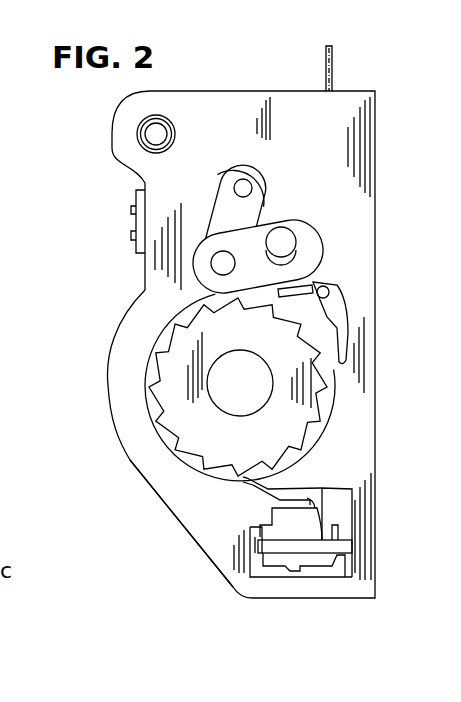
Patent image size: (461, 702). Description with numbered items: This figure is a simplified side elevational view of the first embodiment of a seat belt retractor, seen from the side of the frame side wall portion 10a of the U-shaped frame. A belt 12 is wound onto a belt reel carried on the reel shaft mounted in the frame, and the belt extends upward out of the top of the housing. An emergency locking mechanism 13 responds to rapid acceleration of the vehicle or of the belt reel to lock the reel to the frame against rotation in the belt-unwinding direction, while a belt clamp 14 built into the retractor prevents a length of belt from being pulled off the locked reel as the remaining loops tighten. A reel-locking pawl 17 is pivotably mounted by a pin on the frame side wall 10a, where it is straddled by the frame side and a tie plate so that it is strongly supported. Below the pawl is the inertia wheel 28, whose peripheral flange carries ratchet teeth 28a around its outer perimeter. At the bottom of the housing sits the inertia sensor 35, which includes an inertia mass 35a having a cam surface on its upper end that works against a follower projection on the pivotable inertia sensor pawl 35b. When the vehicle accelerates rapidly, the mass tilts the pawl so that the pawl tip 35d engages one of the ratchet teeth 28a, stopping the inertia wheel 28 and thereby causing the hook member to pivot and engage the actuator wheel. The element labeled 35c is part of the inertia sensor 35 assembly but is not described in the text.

The frame side wall portion 10a is at (218, 552).
The belt 12 is at (333, 60).
The emergency locking mechanism 13 is at (133, 384).
The belt clamp 14 is at (202, 192).
The reel-locking pawl 17 is at (320, 268).
The inertia wheel 28 is at (187, 407).
The ratchet teeth 28a is at (150, 352).
The inertia sensor 35 is at (288, 582).
The inertia mass 35a is at (263, 517).
The inertia sensor pawl 35b is at (307, 485).
The latch plate 35c is at (315, 553).
The pawl tip 35d is at (247, 485).